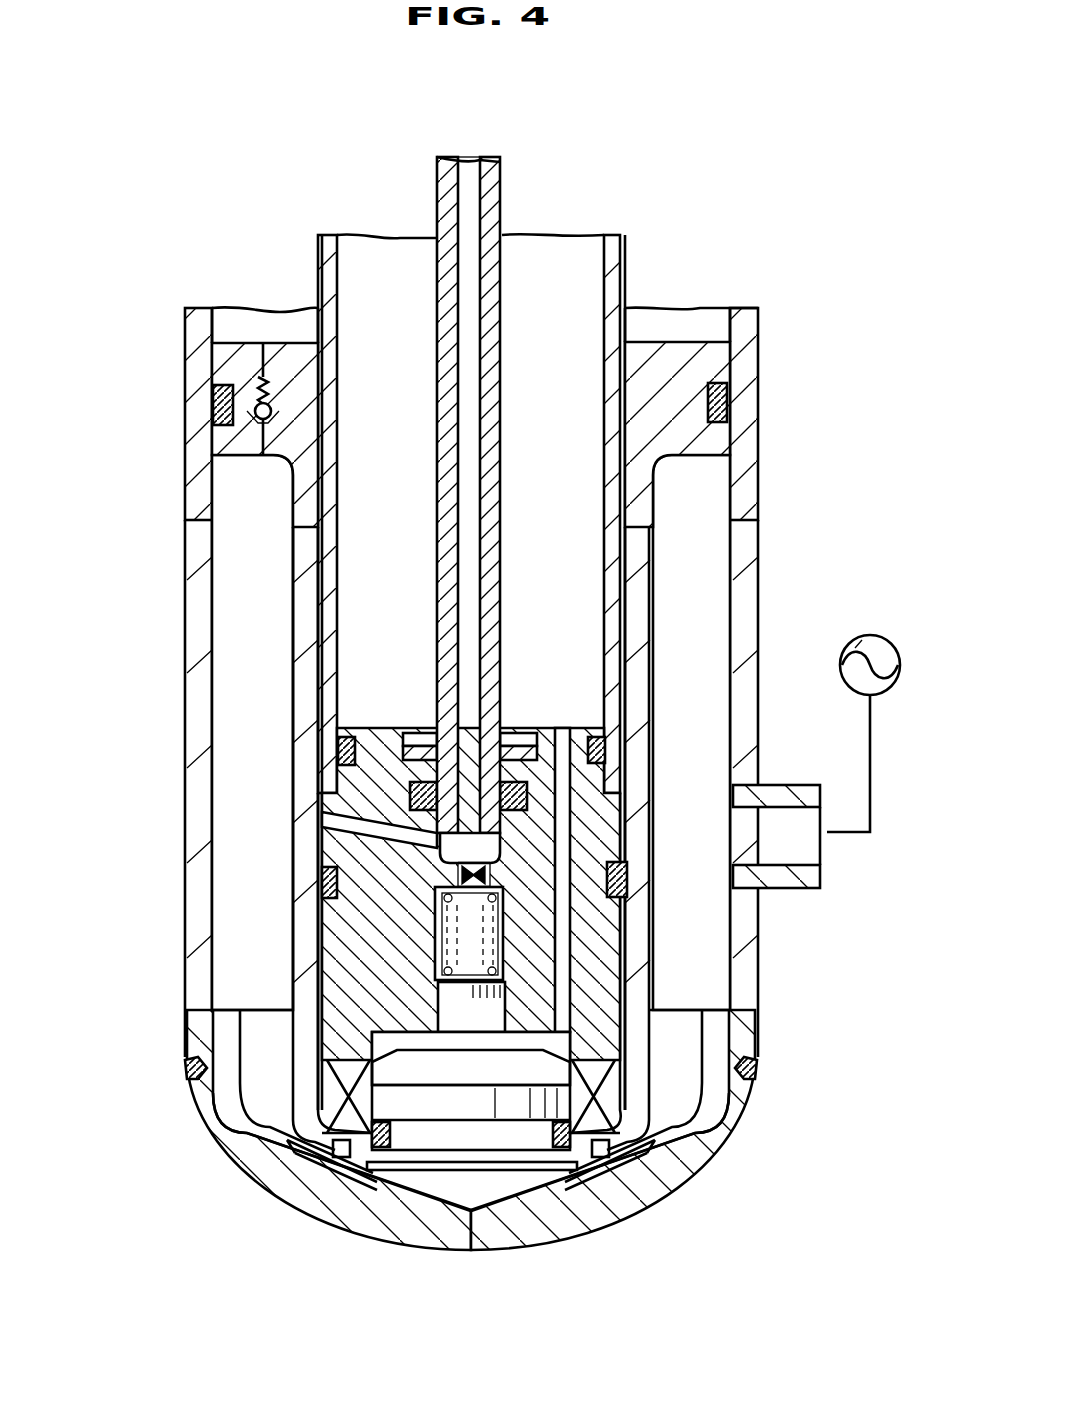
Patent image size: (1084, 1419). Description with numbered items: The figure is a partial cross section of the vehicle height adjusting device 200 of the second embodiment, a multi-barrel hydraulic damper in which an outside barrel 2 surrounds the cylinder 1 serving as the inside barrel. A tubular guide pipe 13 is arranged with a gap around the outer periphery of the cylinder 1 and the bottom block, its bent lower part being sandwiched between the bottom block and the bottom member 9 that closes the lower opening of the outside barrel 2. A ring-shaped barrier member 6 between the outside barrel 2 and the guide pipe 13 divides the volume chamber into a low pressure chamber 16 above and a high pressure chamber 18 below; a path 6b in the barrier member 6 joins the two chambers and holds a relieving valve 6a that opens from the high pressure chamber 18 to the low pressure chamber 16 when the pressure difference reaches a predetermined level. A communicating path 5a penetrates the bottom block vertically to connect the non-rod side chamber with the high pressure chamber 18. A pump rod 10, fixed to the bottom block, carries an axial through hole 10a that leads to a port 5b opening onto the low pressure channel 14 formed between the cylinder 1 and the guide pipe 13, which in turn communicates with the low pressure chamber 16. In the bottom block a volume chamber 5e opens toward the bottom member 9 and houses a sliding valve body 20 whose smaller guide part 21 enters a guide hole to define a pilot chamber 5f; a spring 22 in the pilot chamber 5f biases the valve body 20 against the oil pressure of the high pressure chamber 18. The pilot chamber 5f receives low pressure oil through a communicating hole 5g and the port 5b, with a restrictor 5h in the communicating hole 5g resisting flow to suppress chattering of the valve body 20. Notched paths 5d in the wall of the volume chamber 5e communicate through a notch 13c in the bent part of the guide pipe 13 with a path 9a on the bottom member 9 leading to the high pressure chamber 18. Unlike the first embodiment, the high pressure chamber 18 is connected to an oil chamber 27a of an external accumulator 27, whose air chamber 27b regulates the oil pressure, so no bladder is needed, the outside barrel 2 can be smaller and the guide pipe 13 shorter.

The vehicle height adjusting device 200 is at (657, 193).
The cylinder 1 is at (330, 710).
The outside barrel 2 is at (740, 940).
The communicating path 5a is at (565, 797).
The port 5b is at (330, 822).
The notched path 5d is at (620, 1085).
The volume chamber 5e is at (385, 1040).
The pilot chamber 5f is at (473, 948).
The communicating hole 5g is at (500, 880).
The restrictor 5h is at (463, 862).
The barrier member 6 is at (700, 363).
The relieving valve 6a is at (257, 410).
The path 6b is at (263, 353).
The bottom member 9 is at (697, 1155).
The path 9a is at (560, 1230).
The pump rod 10 is at (497, 437).
The through hole 10a is at (465, 572).
The guide pipe 13 is at (650, 685).
The notch 13c is at (310, 1200).
The low pressure channel 14 is at (313, 636).
The low pressure chamber 16 is at (650, 330).
The high pressure chamber 18 is at (705, 594).
The valve body 20 is at (460, 1110).
The guide part 21 is at (470, 1040).
The spring 22 is at (437, 960).
The accumulator 27 is at (884, 624).
The oil chamber 27a is at (855, 675).
The air chamber 27b is at (857, 646).